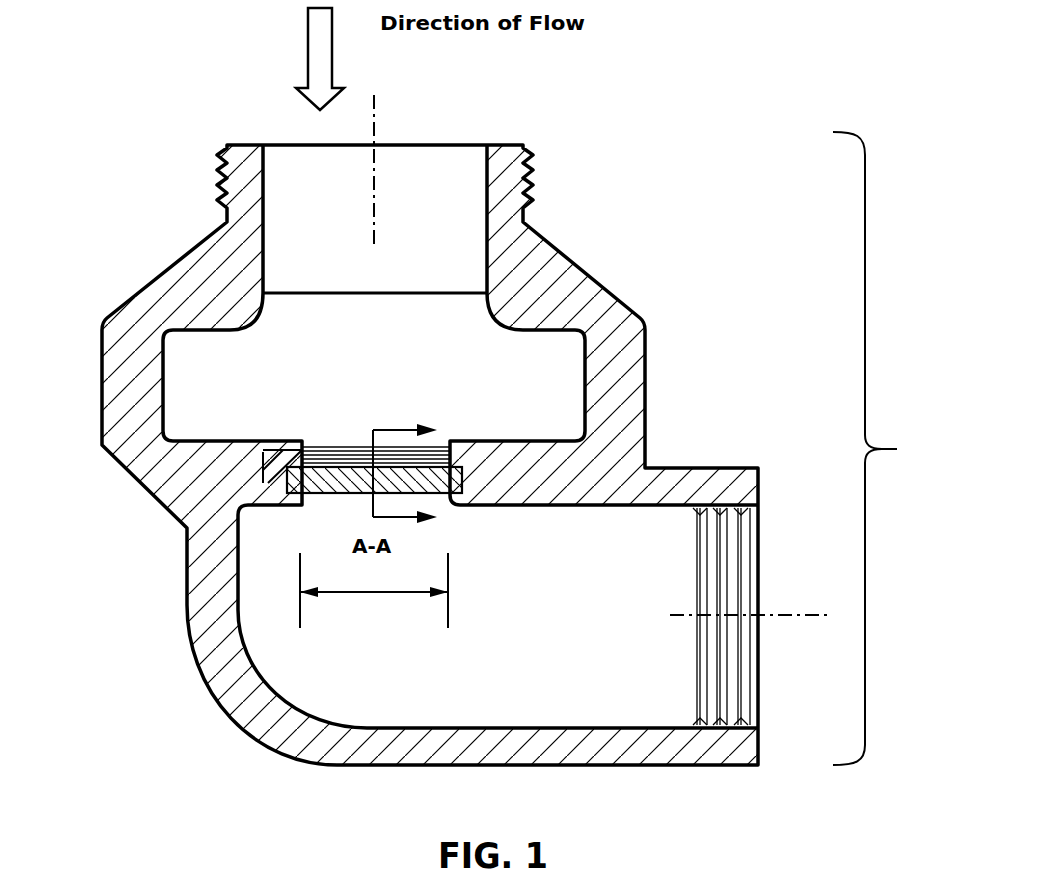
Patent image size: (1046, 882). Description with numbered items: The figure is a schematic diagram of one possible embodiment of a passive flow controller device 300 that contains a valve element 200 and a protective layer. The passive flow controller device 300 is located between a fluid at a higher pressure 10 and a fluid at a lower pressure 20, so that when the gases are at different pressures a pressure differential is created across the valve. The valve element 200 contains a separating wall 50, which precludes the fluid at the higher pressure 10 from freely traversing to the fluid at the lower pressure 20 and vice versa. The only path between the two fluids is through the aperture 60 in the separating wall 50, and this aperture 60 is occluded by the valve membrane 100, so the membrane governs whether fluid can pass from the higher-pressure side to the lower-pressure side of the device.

The fluid at a higher pressure 10 is at (400, 368).
The fluid at a lower pressure 20 is at (373, 678).
The separating wall 50 is at (590, 440).
The aperture 60 is at (403, 590).
The valve membrane 100 is at (273, 492).
The valve element 200 is at (517, 478).
The passive flow controller device 300 is at (893, 448).